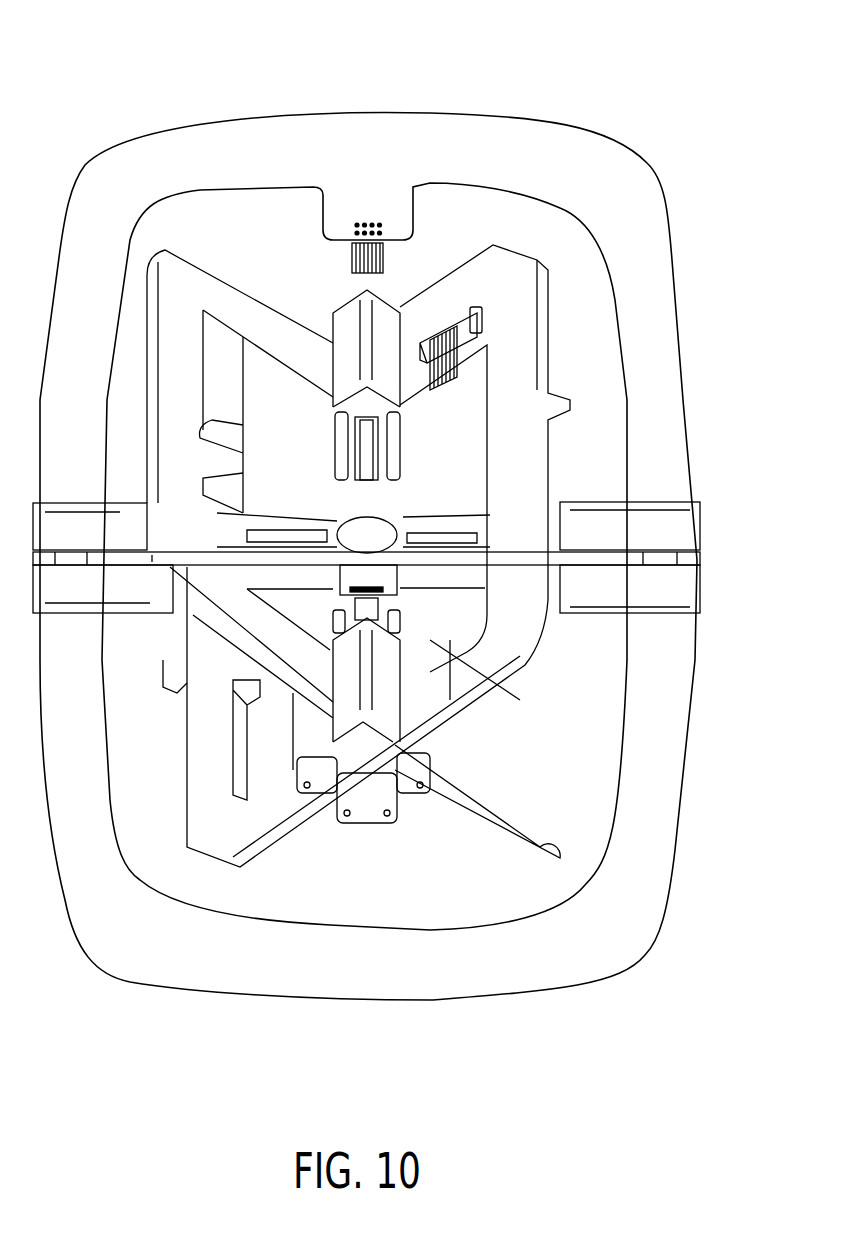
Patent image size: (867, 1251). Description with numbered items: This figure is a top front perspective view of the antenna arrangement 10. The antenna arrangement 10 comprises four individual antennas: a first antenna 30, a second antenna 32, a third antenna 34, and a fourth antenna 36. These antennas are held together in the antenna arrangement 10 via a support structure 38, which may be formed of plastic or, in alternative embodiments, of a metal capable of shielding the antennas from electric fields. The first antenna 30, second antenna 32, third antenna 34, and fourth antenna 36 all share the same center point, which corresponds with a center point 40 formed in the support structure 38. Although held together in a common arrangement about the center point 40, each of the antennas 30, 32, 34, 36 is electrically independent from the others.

The antenna arrangement 10 is at (246, 66).
The first antenna 30 is at (663, 705).
The second antenna 32 is at (565, 558).
The third antenna 34 is at (447, 690).
The fourth antenna 36 is at (537, 827).
The support structure 38 is at (625, 530).
The center point 40 is at (368, 542).